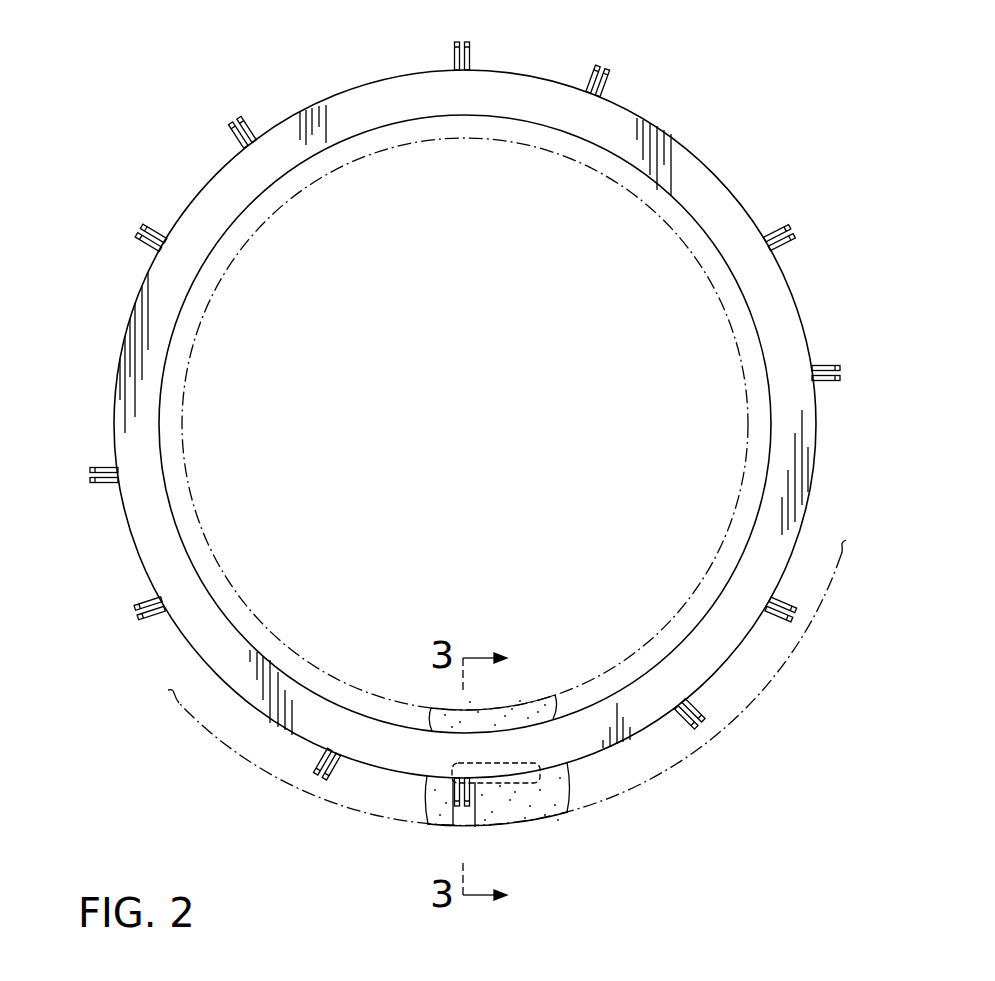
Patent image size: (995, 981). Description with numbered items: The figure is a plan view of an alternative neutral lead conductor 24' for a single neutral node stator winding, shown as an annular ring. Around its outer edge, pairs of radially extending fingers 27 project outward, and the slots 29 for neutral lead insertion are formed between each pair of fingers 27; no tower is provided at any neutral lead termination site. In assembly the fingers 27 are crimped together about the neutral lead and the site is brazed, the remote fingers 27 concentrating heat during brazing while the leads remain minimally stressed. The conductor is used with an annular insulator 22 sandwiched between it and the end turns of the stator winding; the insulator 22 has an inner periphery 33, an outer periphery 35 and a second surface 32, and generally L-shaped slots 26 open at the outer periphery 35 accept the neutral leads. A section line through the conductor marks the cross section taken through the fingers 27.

The insulator 22 is at (547, 834).
The neutral lead conductor 24' is at (465, 406).
The slots 26 is at (522, 783).
The radially extending fingers 27 is at (475, 53).
The slots 29 is at (457, 42).
The second surface 32 is at (560, 806).
The inner periphery 33 is at (530, 703).
The outer periphery 35 is at (533, 823).